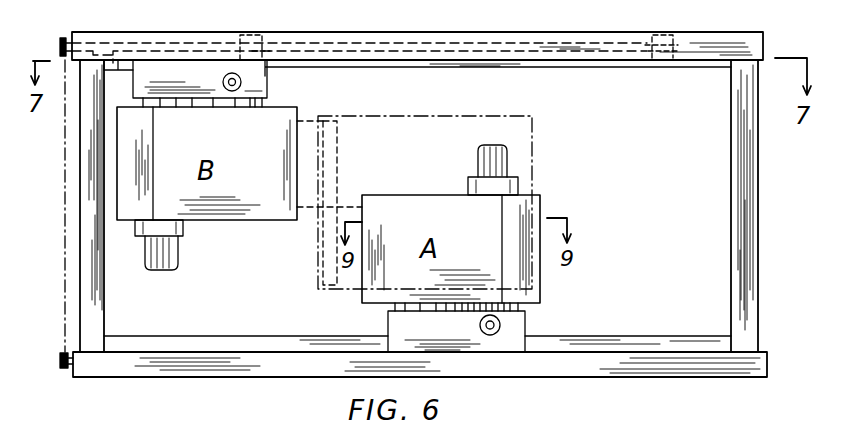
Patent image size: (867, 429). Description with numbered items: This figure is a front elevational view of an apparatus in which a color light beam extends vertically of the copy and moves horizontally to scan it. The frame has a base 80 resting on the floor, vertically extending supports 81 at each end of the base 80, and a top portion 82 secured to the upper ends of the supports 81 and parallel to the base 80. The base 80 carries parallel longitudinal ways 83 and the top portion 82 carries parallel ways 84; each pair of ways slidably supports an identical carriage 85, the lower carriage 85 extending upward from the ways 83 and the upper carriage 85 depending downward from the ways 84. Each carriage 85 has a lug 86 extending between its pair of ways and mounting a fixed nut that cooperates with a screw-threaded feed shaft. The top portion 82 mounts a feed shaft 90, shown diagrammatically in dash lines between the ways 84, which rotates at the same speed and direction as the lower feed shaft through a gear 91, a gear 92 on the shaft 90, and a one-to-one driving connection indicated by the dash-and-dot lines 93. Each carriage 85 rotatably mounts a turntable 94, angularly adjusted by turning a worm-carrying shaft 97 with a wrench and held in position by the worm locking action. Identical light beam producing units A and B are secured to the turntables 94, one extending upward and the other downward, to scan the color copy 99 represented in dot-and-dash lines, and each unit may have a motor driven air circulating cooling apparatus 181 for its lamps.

The base 80 is at (243, 366).
The vertically extending supports 81 is at (105, 310).
The top portion 82 is at (705, 45).
The ways 83 is at (580, 345).
The ways 84 is at (594, 67).
The carriage 85 is at (267, 86).
The lug 86 is at (265, 38).
The shaft 90 is at (480, 50).
The gear 91 is at (60, 358).
The gear 92 is at (62, 40).
The driving connection 93 is at (63, 240).
The turntable 94 is at (243, 104).
The shaft 97 is at (223, 82).
The color copy 99 is at (415, 124).
The motor driven air circulating cooling apparatus 181 is at (183, 228).